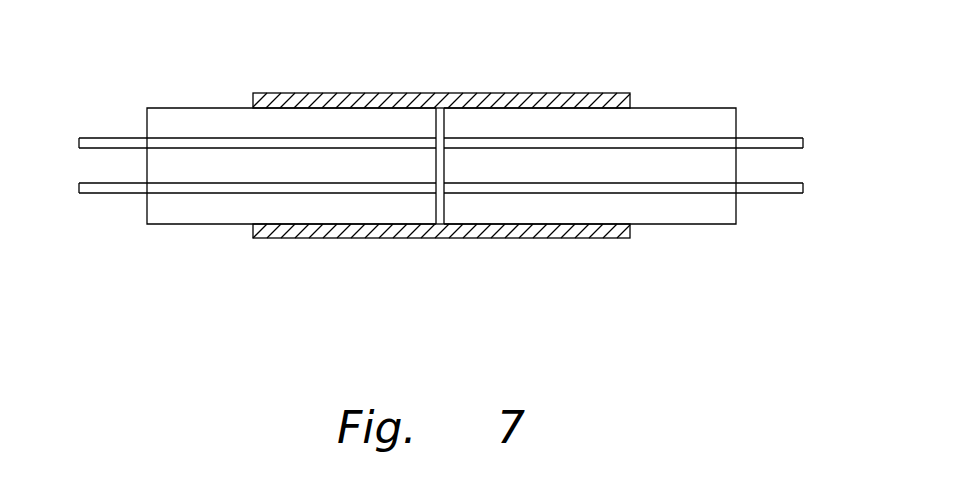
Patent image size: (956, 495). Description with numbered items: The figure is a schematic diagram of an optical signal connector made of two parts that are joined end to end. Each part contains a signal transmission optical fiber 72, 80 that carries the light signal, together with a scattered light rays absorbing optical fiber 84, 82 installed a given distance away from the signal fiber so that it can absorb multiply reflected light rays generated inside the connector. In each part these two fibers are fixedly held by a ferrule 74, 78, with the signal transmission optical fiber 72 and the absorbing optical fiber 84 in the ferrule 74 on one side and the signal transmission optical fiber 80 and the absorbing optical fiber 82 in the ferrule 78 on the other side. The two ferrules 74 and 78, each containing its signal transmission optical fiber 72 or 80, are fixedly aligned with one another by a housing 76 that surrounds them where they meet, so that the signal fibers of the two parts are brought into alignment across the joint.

The signal transmission optical fiber 72 is at (113, 137).
The ferrule 74 is at (215, 123).
The housing 76 is at (452, 93).
The ferrule 78 is at (683, 120).
The signal transmission optical fiber 80 is at (770, 150).
The scattered light rays absorbing optical fiber 82 is at (770, 190).
The scattered light rays absorbing optical fiber 84 is at (118, 183).